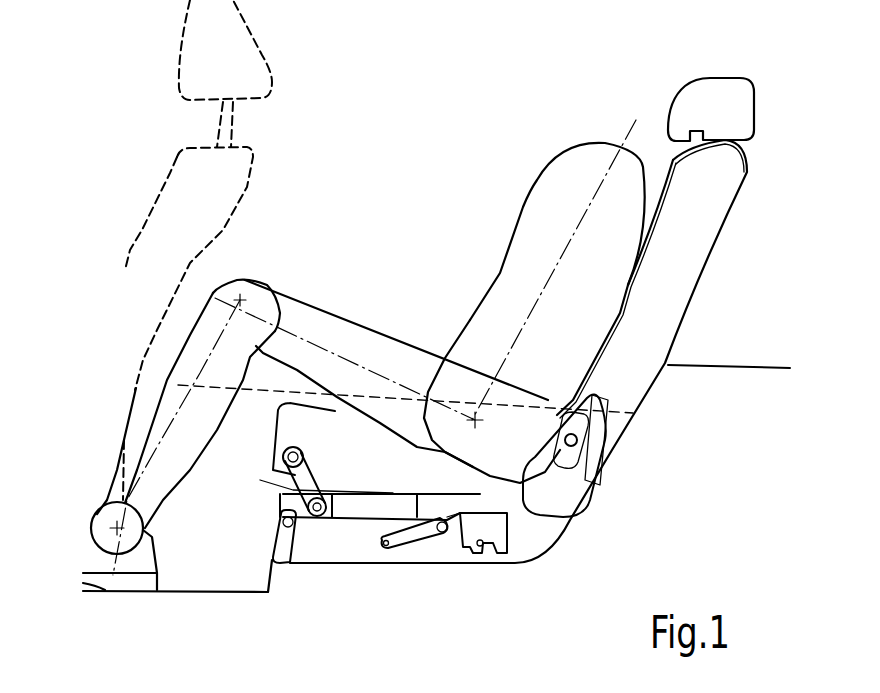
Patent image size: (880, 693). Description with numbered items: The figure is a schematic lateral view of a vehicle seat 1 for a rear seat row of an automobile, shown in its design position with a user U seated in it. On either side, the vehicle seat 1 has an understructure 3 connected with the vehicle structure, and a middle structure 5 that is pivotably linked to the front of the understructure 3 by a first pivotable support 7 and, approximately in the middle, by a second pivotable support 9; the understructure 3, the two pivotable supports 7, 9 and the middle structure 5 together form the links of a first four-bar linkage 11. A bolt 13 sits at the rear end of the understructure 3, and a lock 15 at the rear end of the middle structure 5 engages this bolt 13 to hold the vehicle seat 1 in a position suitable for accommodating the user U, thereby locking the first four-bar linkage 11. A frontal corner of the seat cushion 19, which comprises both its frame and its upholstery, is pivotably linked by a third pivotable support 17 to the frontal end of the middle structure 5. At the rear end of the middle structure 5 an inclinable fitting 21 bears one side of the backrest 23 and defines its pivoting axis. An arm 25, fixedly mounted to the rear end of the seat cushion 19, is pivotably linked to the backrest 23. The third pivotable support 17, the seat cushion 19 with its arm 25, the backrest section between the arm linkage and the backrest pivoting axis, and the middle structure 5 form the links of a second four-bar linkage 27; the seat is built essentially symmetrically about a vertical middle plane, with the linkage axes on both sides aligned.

The vehicle seat 1 is at (663, 417).
The understructure 3 is at (370, 548).
The middle structure 5 is at (352, 537).
The first pivotable support 7 is at (297, 575).
The second pivotable support 9 is at (423, 540).
The first four-bar linkage 11 is at (268, 538).
The bolt 13 is at (480, 548).
The lock 15 is at (493, 545).
The third pivotable support 17 is at (280, 482).
The seat cushion 19 is at (303, 430).
The inclinable fitting 21 is at (540, 480).
The backrest 23 is at (643, 312).
The arm 25 is at (598, 440).
The second four-bar linkage 27 is at (286, 473).
The user U is at (503, 282).